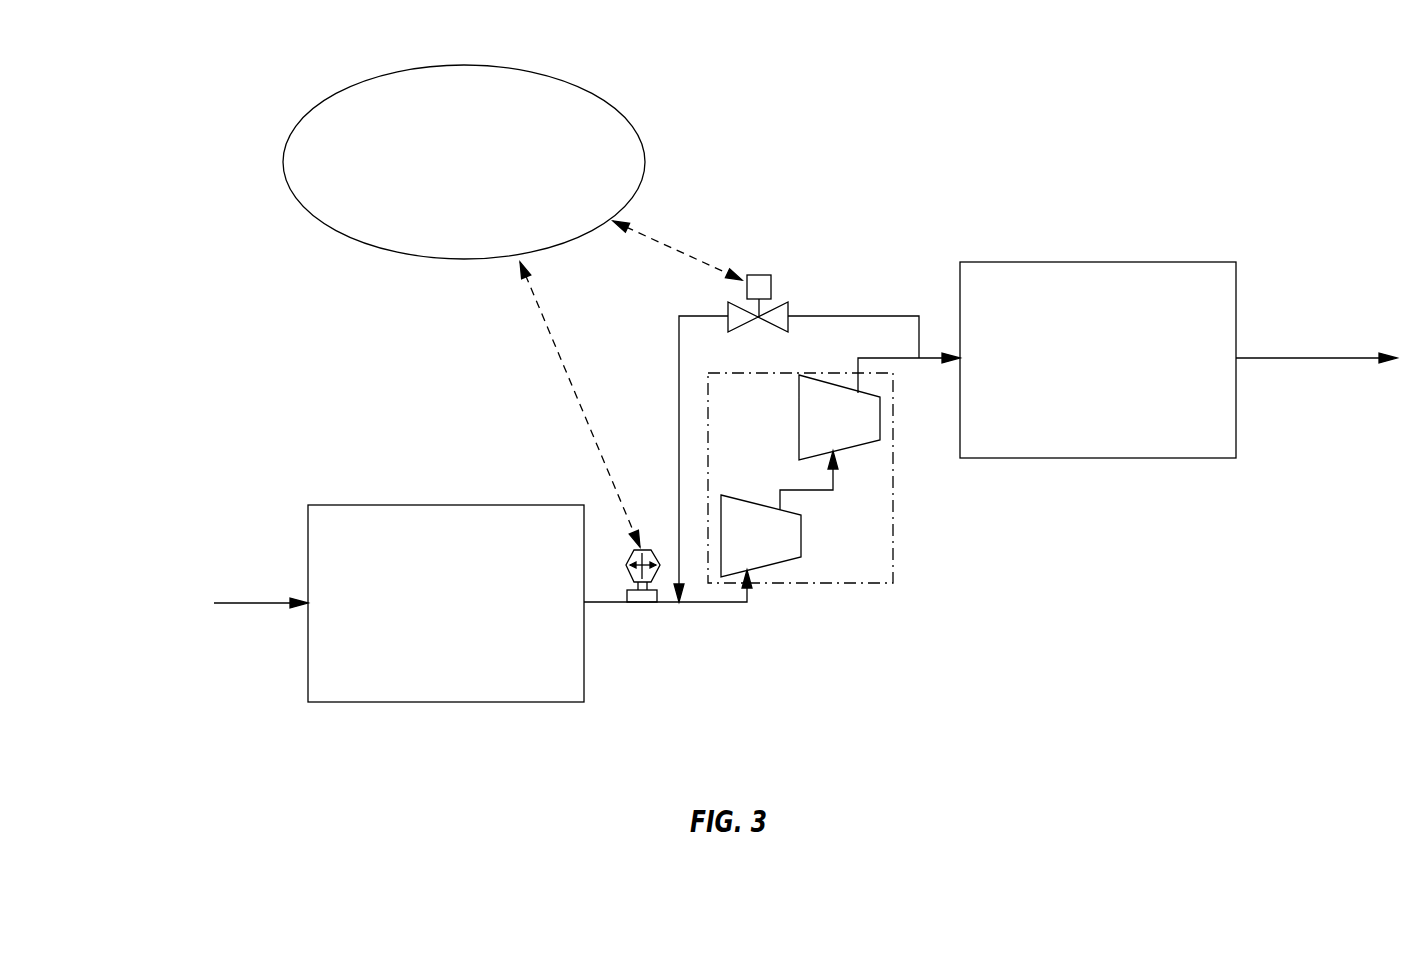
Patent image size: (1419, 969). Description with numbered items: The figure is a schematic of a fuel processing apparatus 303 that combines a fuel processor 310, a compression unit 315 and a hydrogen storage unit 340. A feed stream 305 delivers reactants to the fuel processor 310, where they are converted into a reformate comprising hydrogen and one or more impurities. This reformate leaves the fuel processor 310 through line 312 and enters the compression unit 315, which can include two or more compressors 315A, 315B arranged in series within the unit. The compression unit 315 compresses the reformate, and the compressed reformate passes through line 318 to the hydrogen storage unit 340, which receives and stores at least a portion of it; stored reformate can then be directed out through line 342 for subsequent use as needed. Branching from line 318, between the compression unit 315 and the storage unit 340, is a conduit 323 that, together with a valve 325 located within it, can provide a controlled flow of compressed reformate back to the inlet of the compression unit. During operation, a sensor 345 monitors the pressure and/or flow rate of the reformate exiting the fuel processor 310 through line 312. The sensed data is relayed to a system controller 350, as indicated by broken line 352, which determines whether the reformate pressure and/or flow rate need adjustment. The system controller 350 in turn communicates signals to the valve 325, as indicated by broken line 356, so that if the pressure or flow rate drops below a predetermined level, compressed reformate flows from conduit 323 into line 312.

The fuel processing apparatus 303 is at (183, 84).
The feed stream 305 is at (193, 616).
The fuel processor 310 is at (470, 617).
The line 312 is at (603, 605).
The compression unit 315 is at (836, 478).
The compressor 315A is at (790, 552).
The compressor 315B is at (869, 433).
The line 318 is at (928, 365).
The conduit 323 is at (882, 306).
The valve 325 is at (781, 300).
The hydrogen storage unit 340 is at (1120, 377).
The line 342 is at (1338, 357).
The sensor 345 is at (660, 572).
The system controller 350 is at (488, 177).
The broken line 352 is at (558, 343).
The broken line 356 is at (668, 245).